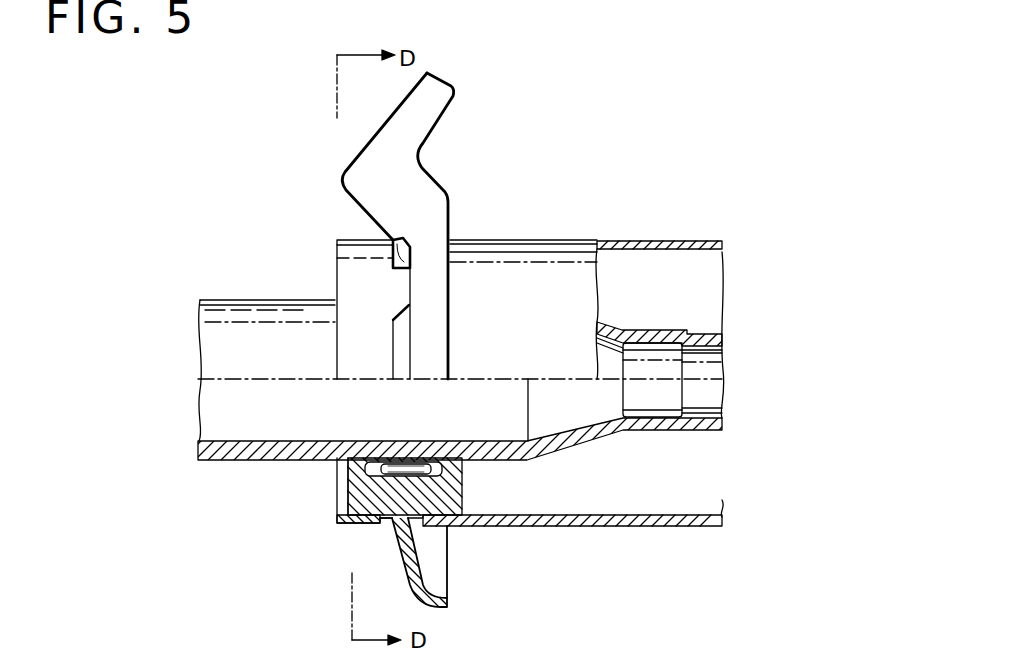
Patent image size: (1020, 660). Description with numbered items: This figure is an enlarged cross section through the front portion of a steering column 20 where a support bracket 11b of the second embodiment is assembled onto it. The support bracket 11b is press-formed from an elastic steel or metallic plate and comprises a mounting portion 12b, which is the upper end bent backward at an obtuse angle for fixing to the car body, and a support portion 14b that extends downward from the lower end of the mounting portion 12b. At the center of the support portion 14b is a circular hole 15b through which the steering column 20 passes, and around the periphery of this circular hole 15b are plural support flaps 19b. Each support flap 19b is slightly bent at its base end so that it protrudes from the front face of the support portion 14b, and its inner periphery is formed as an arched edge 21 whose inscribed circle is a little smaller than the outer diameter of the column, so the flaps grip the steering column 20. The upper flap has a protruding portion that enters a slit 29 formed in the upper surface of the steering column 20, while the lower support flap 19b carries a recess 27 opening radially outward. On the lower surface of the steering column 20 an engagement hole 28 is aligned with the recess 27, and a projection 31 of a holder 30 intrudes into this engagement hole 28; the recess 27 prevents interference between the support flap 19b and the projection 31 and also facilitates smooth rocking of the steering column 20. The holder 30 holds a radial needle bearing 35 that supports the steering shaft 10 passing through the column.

The steering shaft 10 is at (273, 310).
The support bracket 11b is at (401, 348).
The mounting portion 12b is at (410, 118).
The support portion 14b is at (437, 331).
The circular hole 15b is at (393, 268).
The support flap 19b is at (392, 250).
The steering column 20 is at (580, 286).
The arched edge 21 is at (383, 330).
The recess 27 is at (387, 518).
The engagement hole 28 is at (427, 498).
The slit 29 is at (395, 239).
The holder 30 is at (450, 484).
The projection 31 is at (405, 525).
The radial needle bearing 35 is at (352, 478).